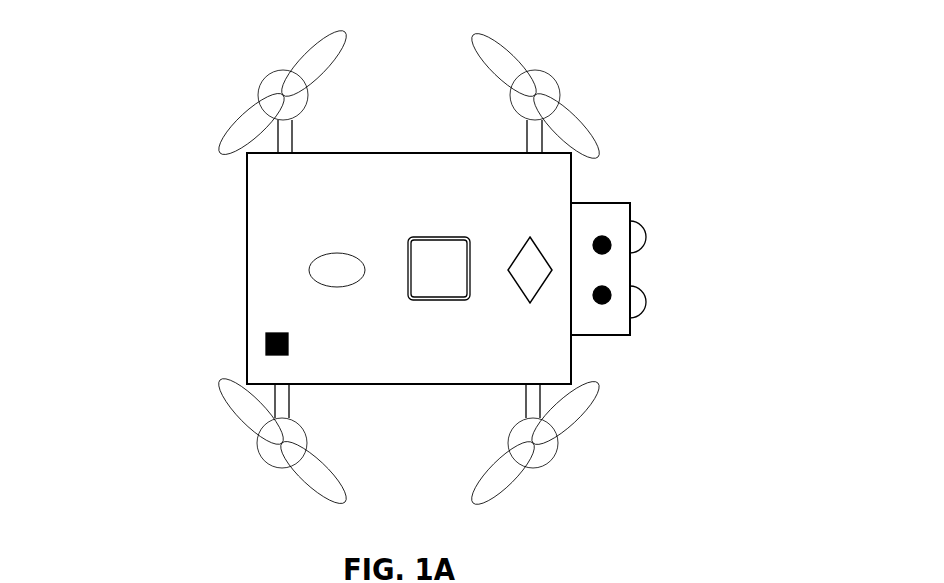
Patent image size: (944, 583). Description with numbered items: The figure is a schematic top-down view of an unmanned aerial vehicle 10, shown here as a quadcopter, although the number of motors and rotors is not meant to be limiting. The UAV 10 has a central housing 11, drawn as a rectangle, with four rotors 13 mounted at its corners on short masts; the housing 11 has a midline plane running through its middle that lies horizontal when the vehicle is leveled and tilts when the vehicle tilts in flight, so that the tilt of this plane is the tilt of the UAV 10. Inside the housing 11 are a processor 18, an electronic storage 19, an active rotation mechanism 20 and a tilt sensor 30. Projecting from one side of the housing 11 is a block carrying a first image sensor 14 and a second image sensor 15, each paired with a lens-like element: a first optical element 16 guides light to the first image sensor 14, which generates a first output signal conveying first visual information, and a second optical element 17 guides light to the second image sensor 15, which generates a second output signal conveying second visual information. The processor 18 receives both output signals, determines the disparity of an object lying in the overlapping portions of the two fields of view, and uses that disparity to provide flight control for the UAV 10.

The unmanned aerial vehicle 10 is at (170, 161).
The housing 11 is at (258, 302).
The rotors 13 is at (250, 405).
The first image sensor 14 is at (602, 245).
The second image sensor 15 is at (602, 295).
The first optical element 16 is at (639, 236).
The second optical element 17 is at (639, 303).
The processor 18 is at (438, 267).
The electronic storage 19 is at (338, 270).
The active rotation mechanism 20 is at (530, 268).
The tilt sensor 30 is at (266, 345).